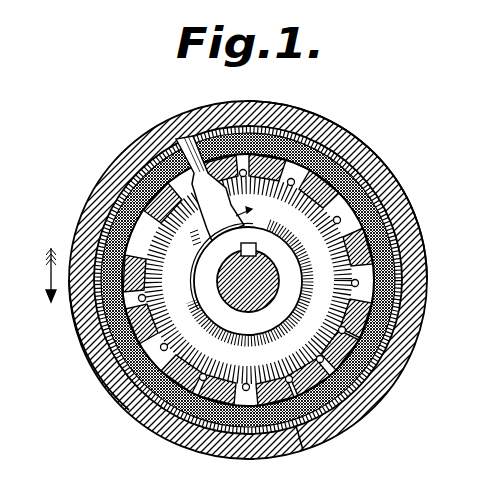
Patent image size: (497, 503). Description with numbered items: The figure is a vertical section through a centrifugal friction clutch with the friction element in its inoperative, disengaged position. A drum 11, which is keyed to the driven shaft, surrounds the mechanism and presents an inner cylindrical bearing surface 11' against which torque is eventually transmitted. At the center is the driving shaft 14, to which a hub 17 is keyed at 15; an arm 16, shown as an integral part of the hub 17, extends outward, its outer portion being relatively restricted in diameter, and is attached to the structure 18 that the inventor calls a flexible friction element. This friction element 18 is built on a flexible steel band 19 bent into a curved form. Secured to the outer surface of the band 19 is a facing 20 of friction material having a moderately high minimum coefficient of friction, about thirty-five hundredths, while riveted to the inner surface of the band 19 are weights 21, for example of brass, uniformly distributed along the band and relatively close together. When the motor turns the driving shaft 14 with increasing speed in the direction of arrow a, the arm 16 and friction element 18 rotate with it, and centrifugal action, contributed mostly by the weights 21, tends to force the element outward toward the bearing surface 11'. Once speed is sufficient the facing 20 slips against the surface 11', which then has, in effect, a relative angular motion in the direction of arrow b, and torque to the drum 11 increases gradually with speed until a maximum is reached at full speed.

The drum 11 is at (268, 280).
The inner cylindrical bearing surface 11' is at (353, 190).
The driving shaft 14 is at (263, 285).
The key 15 is at (247, 242).
The arm 16 is at (140, 262).
The hub 17 is at (251, 316).
The flexible friction element 18 is at (68, 197).
The flexible steel band 19 is at (95, 378).
The facing of friction material 20 is at (290, 428).
The weights 21 is at (135, 303).
The arrow indicating direction of rotation of driving shaft a is at (214, 207).
The arrow indicating relative angular motion of bearing surface b is at (43, 276).